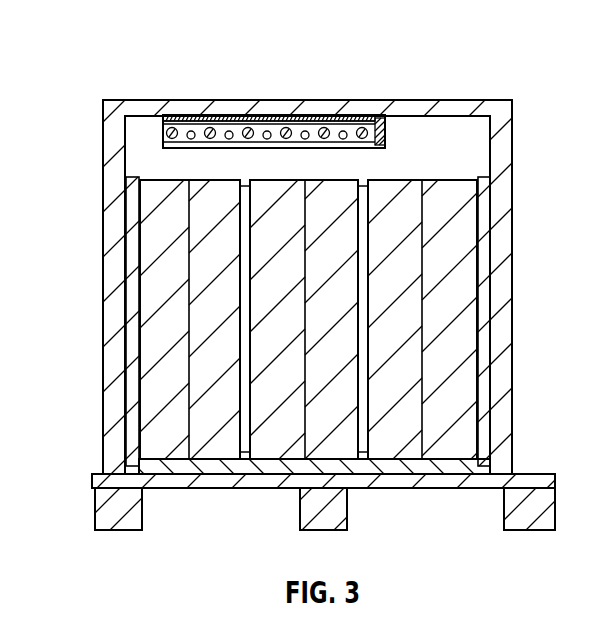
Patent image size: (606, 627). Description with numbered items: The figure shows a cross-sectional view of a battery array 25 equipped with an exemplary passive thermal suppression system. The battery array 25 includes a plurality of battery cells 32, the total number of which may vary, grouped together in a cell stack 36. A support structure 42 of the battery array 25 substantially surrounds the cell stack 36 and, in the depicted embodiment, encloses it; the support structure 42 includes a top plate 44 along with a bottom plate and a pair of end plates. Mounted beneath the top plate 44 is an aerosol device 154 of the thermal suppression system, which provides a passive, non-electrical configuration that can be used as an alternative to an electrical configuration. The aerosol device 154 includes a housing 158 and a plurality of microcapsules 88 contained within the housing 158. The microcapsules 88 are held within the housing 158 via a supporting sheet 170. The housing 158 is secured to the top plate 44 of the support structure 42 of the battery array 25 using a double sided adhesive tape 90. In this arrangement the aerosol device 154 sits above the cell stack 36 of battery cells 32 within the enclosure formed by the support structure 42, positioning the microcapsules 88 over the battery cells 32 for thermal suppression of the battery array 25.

The battery array 25 is at (497, 49).
The support structure 42 is at (90, 103).
The cell stack 36 is at (157, 174).
The aerosol device 154 is at (153, 125).
The top plate 44 is at (328, 100).
The double sided adhesive tape 90 is at (252, 120).
The microcapsules 88 is at (213, 125).
The housing 158 is at (187, 125).
The supporting sheet 170 is at (388, 135).
The battery cells 32 is at (218, 450).